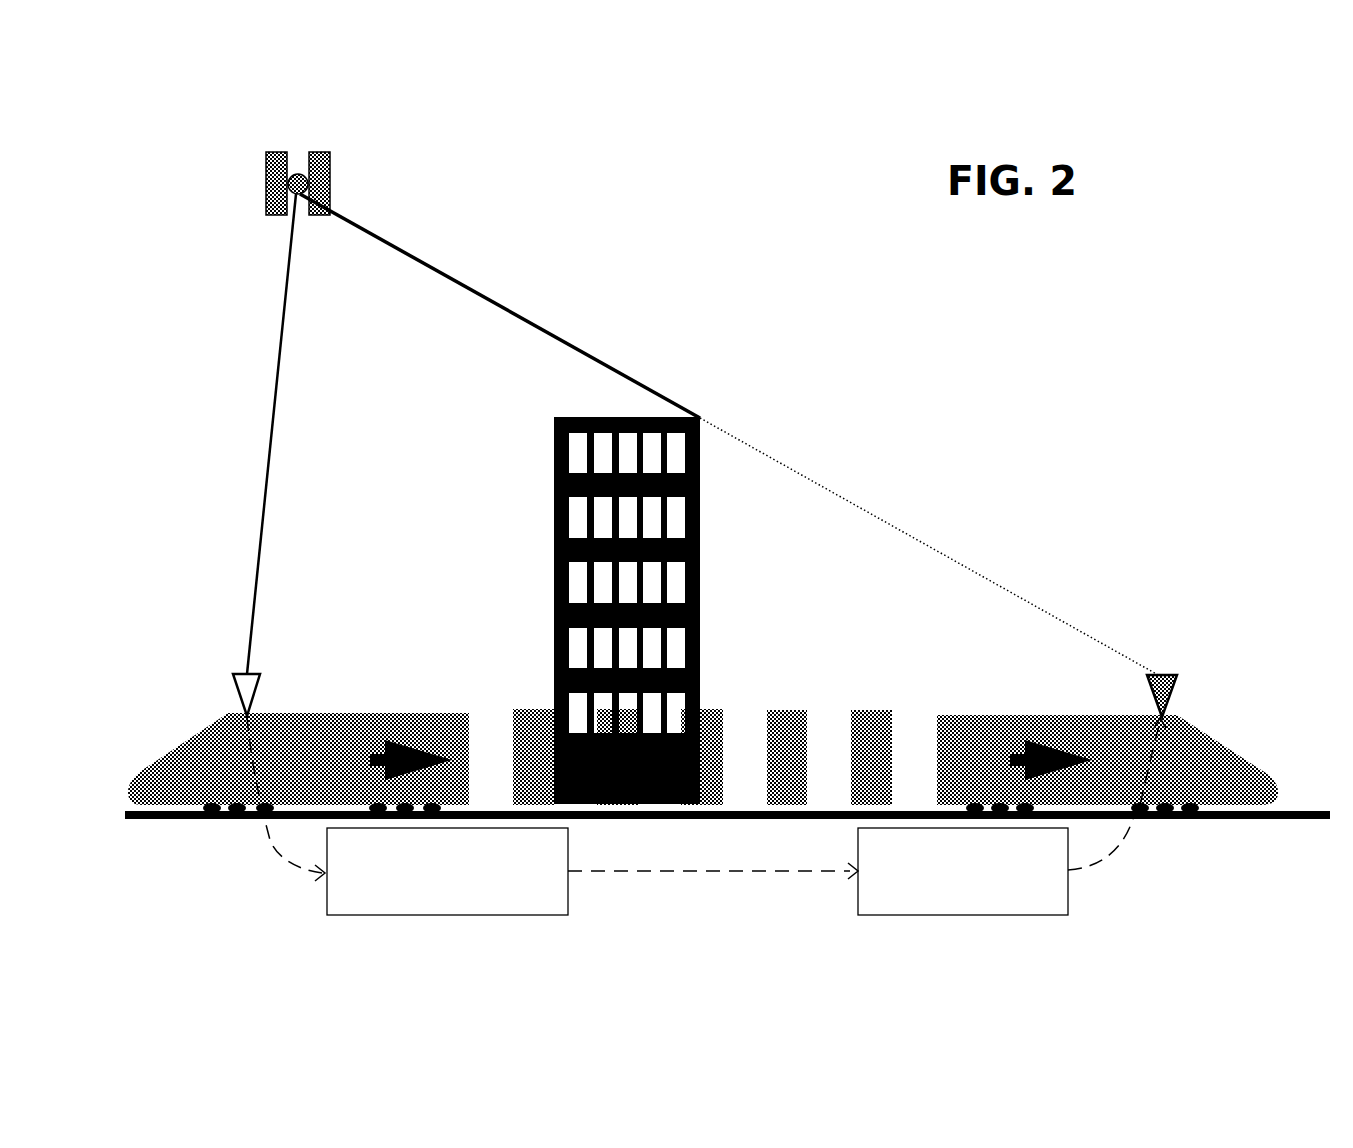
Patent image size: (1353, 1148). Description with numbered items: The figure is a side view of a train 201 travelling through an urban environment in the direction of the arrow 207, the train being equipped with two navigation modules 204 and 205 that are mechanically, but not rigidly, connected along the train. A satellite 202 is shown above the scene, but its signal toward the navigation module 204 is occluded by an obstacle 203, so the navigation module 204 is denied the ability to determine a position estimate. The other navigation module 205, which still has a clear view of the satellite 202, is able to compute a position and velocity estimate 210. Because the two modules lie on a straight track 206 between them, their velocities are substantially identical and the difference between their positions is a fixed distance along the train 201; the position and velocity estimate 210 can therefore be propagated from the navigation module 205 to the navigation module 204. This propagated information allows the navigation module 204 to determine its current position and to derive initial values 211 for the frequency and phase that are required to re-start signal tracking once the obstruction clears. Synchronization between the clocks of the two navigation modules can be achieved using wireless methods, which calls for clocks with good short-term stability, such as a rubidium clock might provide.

The train 201 is at (408, 712).
The satellite 202 is at (331, 190).
The obstacle 203 is at (568, 416).
The navigation module 204 is at (1160, 674).
The navigation module 205 is at (260, 676).
The straight track 206 is at (725, 820).
The arrow 207 is at (702, 760).
The position and velocity estimate 210 is at (327, 910).
The initial values 211 is at (1068, 897).